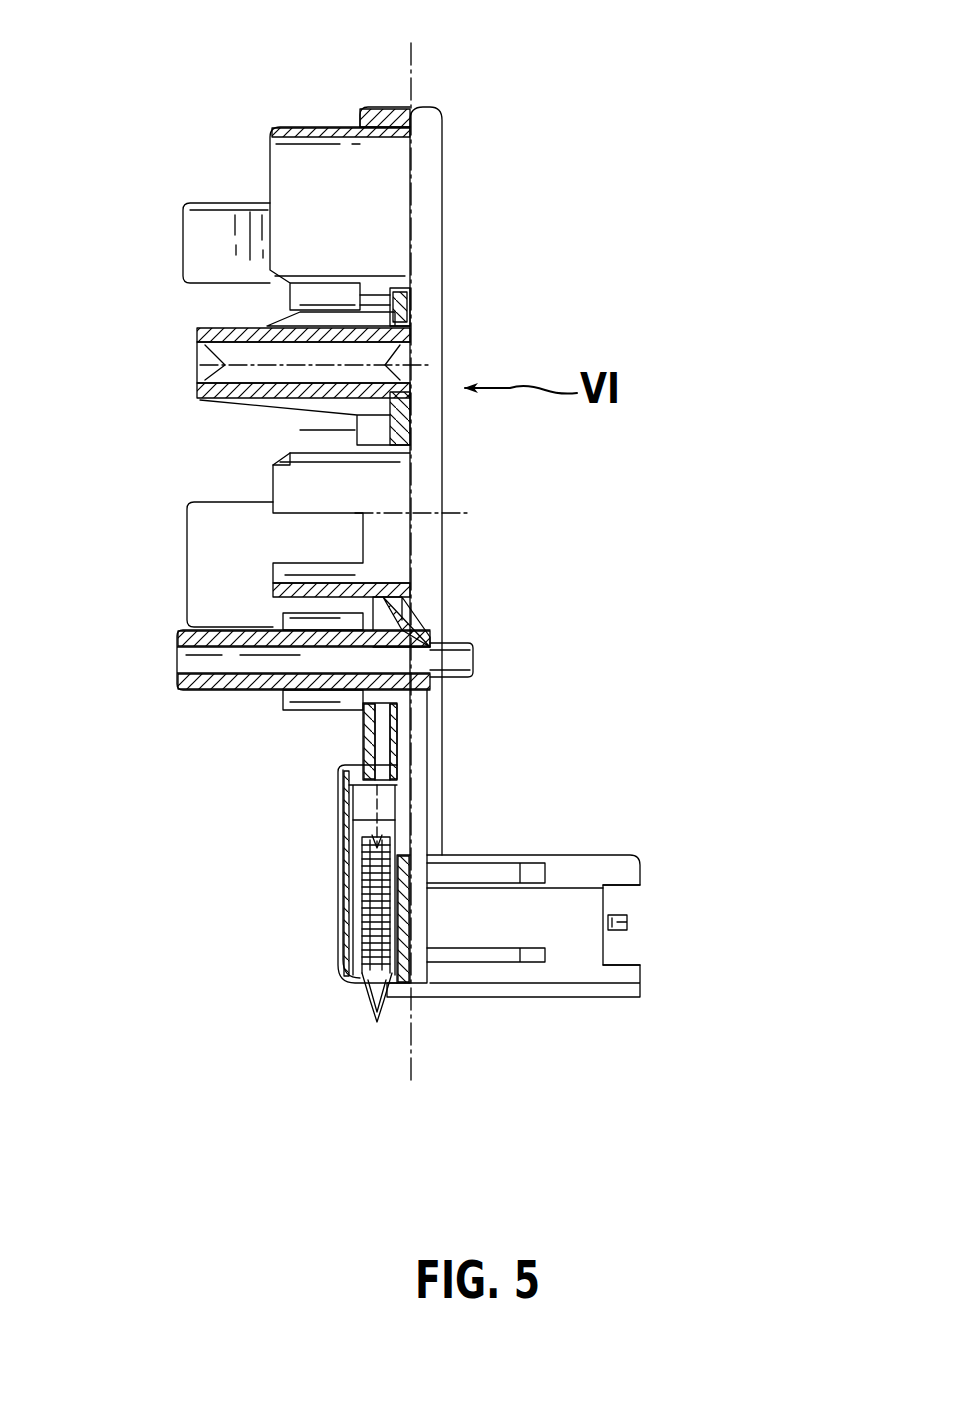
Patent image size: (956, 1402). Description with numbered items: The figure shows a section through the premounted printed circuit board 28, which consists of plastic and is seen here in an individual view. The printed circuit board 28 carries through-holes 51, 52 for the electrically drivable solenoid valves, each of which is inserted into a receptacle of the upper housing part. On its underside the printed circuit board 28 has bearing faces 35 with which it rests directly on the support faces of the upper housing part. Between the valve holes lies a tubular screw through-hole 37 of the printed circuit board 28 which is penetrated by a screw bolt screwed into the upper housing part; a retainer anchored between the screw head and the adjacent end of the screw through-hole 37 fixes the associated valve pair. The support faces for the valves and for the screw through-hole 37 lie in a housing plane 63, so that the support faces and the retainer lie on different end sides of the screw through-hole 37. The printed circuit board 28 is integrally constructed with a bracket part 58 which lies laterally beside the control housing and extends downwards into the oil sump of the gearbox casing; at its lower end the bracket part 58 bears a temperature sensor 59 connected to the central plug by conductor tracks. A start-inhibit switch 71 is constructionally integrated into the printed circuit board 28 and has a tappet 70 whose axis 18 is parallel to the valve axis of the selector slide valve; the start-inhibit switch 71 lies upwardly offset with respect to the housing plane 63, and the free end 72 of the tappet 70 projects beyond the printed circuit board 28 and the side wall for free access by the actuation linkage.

The housing plane 63 is at (411, 48).
The through-hole 51 is at (385, 178).
The bearing face 35 is at (410, 330).
The screw through-hole 37 is at (250, 400).
The through-hole 52 is at (308, 581).
The printed circuit board 28 is at (178, 572).
The axis 18 is at (372, 762).
The bracket part 58 is at (556, 866).
The temperature sensor 59 is at (625, 918).
The start-inhibit switch 71 is at (348, 918).
The tappet 70 is at (395, 950).
The free end 72 is at (374, 1020).